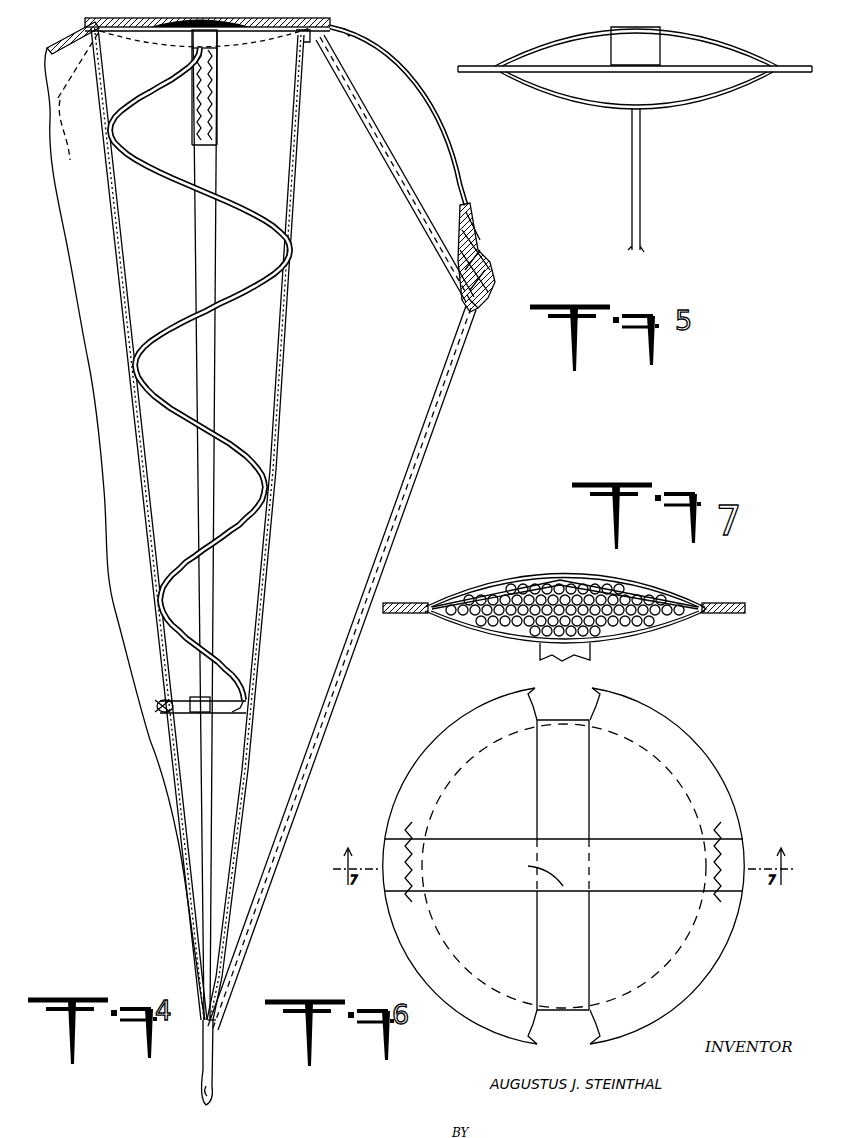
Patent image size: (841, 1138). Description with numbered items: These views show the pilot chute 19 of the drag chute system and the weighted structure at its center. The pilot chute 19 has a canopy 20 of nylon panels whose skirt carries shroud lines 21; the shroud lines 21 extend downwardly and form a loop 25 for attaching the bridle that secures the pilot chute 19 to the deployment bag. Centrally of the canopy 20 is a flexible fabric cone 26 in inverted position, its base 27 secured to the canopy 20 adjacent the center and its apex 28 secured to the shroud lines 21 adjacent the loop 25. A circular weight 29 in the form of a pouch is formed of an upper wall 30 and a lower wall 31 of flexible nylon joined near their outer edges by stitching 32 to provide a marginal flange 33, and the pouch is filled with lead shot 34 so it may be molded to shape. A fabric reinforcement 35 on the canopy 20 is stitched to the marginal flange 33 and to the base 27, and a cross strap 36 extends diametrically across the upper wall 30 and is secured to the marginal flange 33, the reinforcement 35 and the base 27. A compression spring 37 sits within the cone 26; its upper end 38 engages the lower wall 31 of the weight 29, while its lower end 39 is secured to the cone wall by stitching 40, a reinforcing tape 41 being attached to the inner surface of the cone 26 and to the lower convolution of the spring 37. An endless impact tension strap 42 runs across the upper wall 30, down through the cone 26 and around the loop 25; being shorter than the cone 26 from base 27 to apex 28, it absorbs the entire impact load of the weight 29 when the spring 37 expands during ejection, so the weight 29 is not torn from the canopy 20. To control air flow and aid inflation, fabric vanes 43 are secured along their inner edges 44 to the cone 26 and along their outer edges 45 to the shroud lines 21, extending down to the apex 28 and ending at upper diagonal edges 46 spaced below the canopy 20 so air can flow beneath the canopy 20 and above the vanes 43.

In FIG. 4, the pilot chute 19 is at (470, 194).
In FIG. 4, the canopy 20 is at (445, 128).
In FIG. 4, the shroud lines 21 is at (478, 308).
In FIG. 4, the loop 25 is at (213, 1084).
In FIG. 4, the flexible fabric cone 26 is at (264, 540).
In FIG. 4, the base 27 is at (308, 44).
In FIG. 4, the apex 28 is at (218, 982).
In FIG. 4, the weight 29 is at (245, 20).
In FIG. 5, the weight 29 is at (742, 42).
In FIG. 7, the upper wall 30 is at (662, 590).
In FIG. 6, the upper wall 30 is at (645, 794).
In FIG. 7, the lower wall 31 is at (655, 631).
In FIG. 7, the stitching 32 is at (704, 602).
In FIG. 5, the marginal flange 33 is at (806, 75).
In FIG. 7, the marginal flange 33 is at (745, 605).
In FIG. 6, the marginal flange 33 is at (722, 772).
In FIG. 7, the lead shot 34 is at (504, 585).
In FIG. 4, the reinforcement 35 is at (346, 28).
In FIG. 5, the cross strap 36 is at (612, 28).
In FIG. 7, the cross strap 36 is at (622, 578).
In FIG. 6, the cross strap 36 is at (648, 842).
In FIG. 4, the compression spring 37 is at (240, 307).
In FIG. 4, the upper end 38 is at (230, 44).
In FIG. 4, the lower end 39 is at (236, 698).
In FIG. 4, the stitching 40 is at (154, 700).
In FIG. 4, the reinforcing tape 41 is at (186, 700).
In FIG. 4, the impact tension strap 42 is at (195, 252).
In FIG. 5, the impact tension strap 42 is at (668, 32).
In FIG. 7, the impact tension strap 42 is at (572, 577).
In FIG. 6, the impact tension strap 42 is at (537, 794).
In FIG. 4, the fabric vanes 43 is at (393, 213).
In FIG. 4, the inner edges 44 is at (283, 342).
In FIG. 4, the outer edges 45 is at (422, 462).
In FIG. 4, the diagonal edges 46 is at (386, 160).